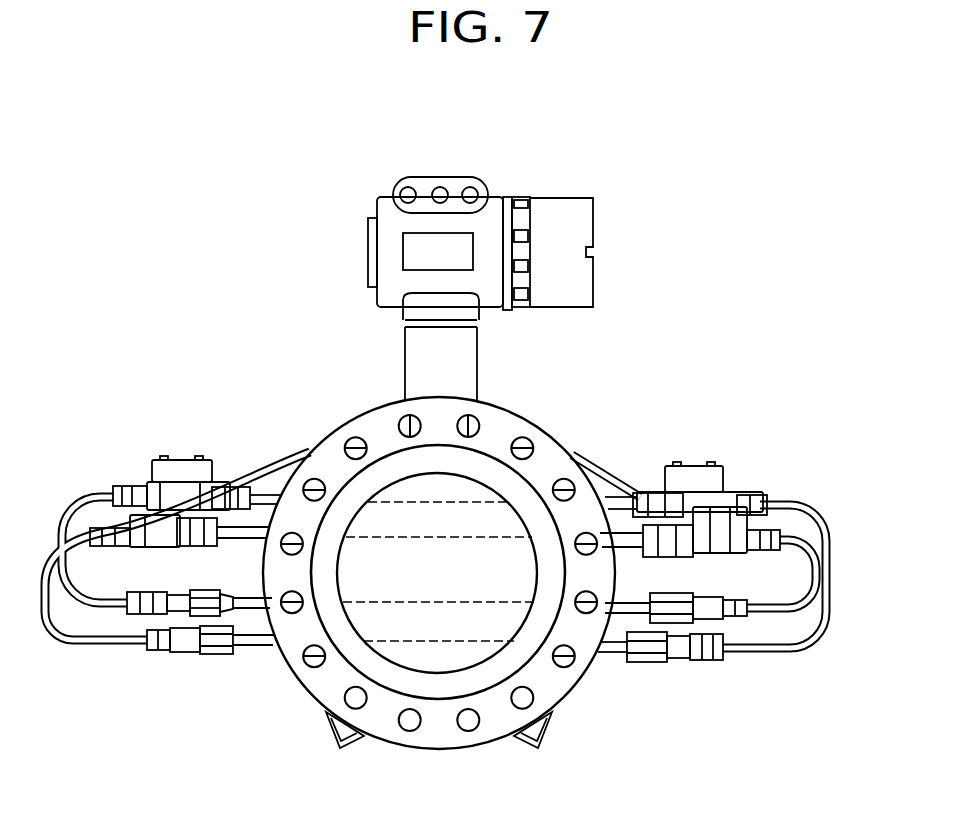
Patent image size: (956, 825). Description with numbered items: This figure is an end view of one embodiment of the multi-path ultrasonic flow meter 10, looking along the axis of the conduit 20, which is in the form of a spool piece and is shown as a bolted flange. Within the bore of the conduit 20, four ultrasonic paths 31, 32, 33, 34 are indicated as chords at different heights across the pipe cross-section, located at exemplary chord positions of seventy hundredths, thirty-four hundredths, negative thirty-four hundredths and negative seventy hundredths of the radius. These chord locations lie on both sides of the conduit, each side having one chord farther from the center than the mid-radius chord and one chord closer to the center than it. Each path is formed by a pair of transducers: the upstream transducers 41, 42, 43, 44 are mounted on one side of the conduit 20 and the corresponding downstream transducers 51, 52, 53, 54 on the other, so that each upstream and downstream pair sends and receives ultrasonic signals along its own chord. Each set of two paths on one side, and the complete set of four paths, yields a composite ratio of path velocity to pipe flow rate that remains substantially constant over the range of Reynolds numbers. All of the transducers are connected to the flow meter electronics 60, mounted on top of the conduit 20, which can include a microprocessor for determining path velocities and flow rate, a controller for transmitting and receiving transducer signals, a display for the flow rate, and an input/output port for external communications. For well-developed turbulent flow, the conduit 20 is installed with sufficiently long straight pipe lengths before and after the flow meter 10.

The multi-path ultrasonic flow meter 10 is at (245, 349).
The conduit 20 is at (501, 650).
The ultrasonic path 31 is at (440, 503).
The ultrasonic path 32 is at (376, 537).
The ultrasonic path 33 is at (404, 602).
The ultrasonic path 34 is at (386, 641).
The upstream transducer 41 is at (180, 460).
The upstream transducer 42 is at (715, 537).
The upstream transducer 43 is at (163, 613).
The upstream transducer 44 is at (670, 652).
The downstream transducer 51 is at (690, 466).
The downstream transducer 52 is at (163, 540).
The downstream transducer 53 is at (740, 620).
The downstream transducer 54 is at (190, 648).
The flow meter electronics 60 is at (498, 193).